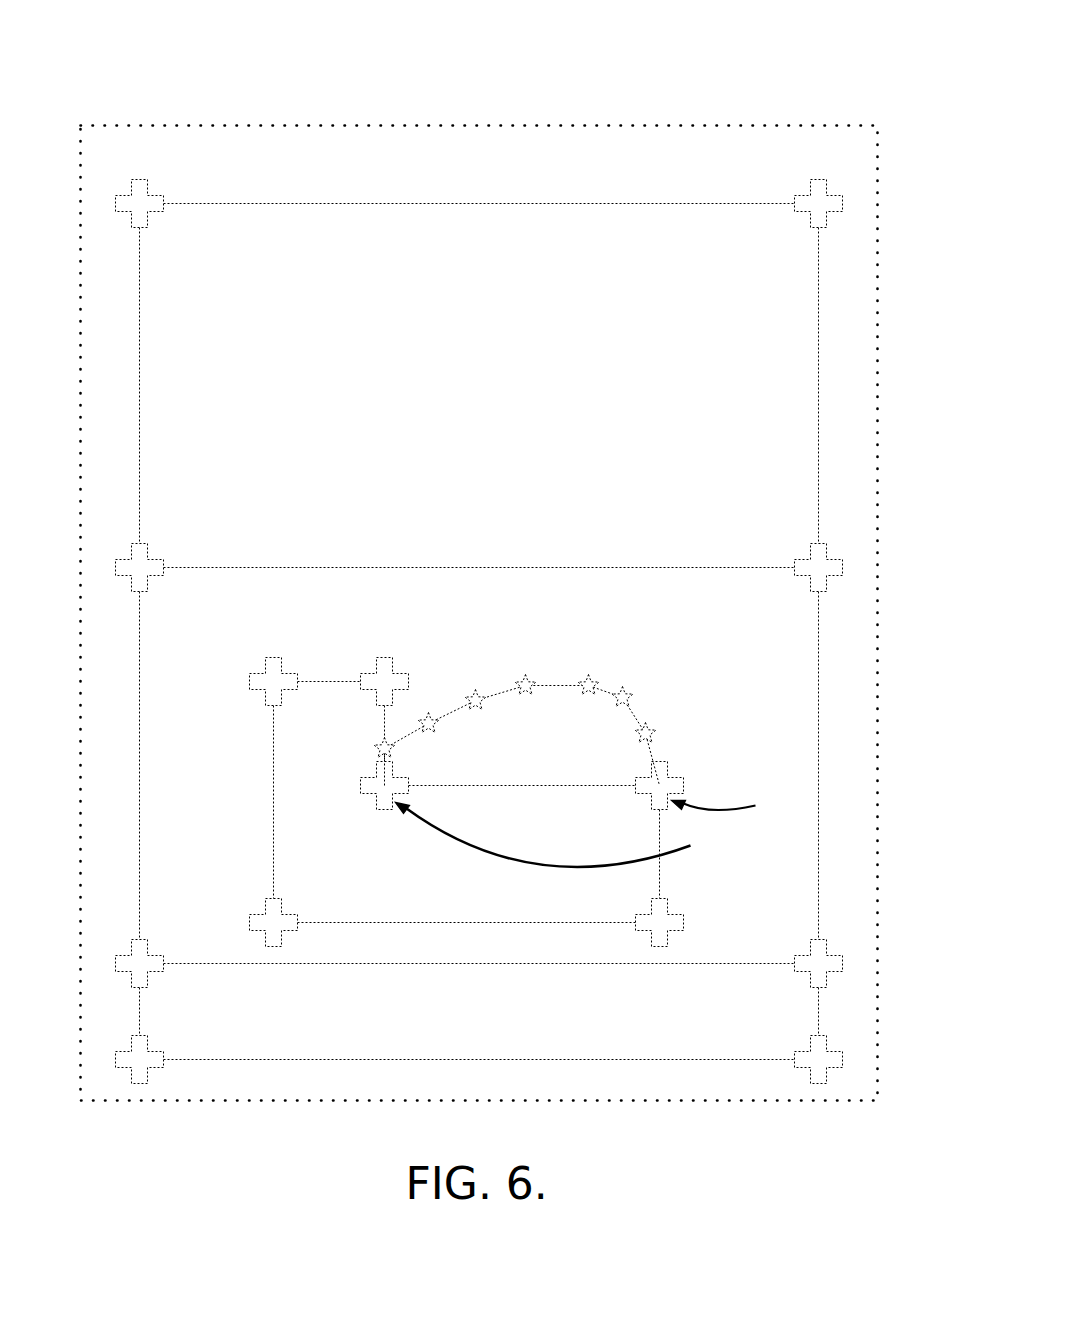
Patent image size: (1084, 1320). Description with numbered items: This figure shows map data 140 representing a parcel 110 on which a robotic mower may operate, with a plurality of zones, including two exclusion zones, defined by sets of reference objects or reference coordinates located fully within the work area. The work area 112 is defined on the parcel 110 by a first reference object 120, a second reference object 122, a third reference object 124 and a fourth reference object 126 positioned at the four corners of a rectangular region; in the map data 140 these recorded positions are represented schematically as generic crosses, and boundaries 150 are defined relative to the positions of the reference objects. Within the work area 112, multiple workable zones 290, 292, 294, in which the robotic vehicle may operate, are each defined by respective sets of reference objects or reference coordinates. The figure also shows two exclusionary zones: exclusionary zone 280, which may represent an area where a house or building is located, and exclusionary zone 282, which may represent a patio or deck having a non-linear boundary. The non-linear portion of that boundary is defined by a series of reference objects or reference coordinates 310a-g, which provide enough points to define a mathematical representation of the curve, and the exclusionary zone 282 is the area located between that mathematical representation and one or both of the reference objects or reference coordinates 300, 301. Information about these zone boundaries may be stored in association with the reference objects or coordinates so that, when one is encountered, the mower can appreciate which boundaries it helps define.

The map data 140 is at (212, 80).
The parcel 110 is at (853, 369).
The work area 112 is at (530, 222).
The first reference object 120 is at (148, 198).
The second reference object 122 is at (840, 195).
The third reference object 124 is at (840, 1053).
The fourth reference object 126 is at (143, 1035).
The boundaries 150 is at (302, 205).
The workable zone 290 is at (479, 462).
The workable zone 292 is at (479, 875).
The workable zone 294 is at (479, 1025).
The exclusionary zone 280 is at (612, 897).
The exclusionary zone 282 is at (612, 763).
The reference object or reference coordinate 300 is at (734, 804).
The reference object or reference coordinate 301 is at (566, 835).
The reference objects or reference coordinates 310a-g is at (403, 720).